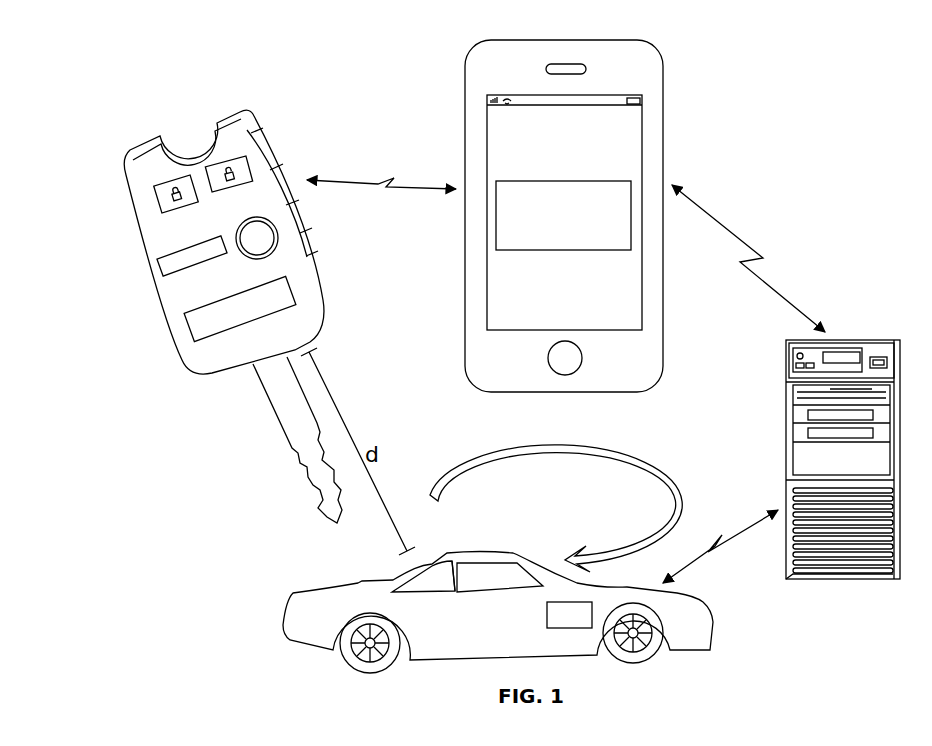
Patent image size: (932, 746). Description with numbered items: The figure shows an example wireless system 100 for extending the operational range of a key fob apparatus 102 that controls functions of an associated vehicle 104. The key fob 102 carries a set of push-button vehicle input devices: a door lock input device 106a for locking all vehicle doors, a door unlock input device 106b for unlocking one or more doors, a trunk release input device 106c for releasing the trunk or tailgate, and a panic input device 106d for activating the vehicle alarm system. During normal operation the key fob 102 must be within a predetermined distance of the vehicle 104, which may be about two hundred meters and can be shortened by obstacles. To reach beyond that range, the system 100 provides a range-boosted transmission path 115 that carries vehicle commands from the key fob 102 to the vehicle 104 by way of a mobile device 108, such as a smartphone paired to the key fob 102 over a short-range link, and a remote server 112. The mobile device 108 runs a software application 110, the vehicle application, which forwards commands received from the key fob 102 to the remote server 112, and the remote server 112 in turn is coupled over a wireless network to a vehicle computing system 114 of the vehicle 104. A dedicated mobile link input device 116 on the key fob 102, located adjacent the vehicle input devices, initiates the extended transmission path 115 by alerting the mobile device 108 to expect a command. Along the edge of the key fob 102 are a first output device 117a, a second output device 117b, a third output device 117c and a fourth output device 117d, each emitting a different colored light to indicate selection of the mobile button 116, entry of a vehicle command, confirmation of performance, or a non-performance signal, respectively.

The wireless system 100 is at (84, 55).
The key fob apparatus 102 is at (135, 150).
The vehicle 104 is at (328, 587).
The door lock input device 106a is at (153, 199).
The door unlock input device 106b is at (224, 157).
The trunk release input device 106c is at (148, 267).
The panic input device 106d is at (187, 328).
The mobile device 108 is at (583, 40).
The software application 110 is at (580, 180).
The remote server 112 is at (850, 340).
The vehicle computing system 114 is at (570, 629).
The range-boosted transmission path 115 is at (567, 458).
The mobile link input device 116 is at (270, 262).
The first output device 117a is at (258, 137).
The second output device 117b is at (277, 173).
The third output device 117c is at (293, 213).
The fourth output device 117d is at (307, 243).